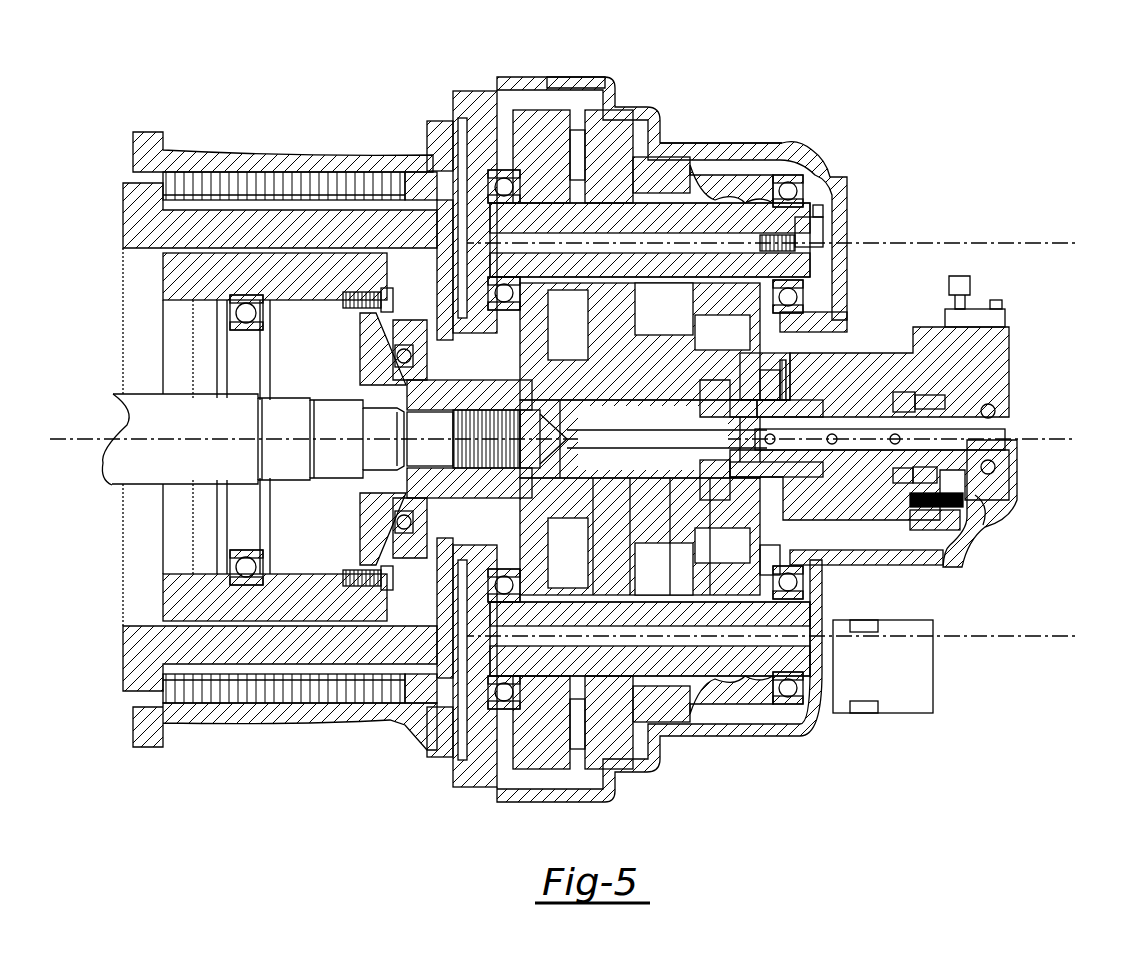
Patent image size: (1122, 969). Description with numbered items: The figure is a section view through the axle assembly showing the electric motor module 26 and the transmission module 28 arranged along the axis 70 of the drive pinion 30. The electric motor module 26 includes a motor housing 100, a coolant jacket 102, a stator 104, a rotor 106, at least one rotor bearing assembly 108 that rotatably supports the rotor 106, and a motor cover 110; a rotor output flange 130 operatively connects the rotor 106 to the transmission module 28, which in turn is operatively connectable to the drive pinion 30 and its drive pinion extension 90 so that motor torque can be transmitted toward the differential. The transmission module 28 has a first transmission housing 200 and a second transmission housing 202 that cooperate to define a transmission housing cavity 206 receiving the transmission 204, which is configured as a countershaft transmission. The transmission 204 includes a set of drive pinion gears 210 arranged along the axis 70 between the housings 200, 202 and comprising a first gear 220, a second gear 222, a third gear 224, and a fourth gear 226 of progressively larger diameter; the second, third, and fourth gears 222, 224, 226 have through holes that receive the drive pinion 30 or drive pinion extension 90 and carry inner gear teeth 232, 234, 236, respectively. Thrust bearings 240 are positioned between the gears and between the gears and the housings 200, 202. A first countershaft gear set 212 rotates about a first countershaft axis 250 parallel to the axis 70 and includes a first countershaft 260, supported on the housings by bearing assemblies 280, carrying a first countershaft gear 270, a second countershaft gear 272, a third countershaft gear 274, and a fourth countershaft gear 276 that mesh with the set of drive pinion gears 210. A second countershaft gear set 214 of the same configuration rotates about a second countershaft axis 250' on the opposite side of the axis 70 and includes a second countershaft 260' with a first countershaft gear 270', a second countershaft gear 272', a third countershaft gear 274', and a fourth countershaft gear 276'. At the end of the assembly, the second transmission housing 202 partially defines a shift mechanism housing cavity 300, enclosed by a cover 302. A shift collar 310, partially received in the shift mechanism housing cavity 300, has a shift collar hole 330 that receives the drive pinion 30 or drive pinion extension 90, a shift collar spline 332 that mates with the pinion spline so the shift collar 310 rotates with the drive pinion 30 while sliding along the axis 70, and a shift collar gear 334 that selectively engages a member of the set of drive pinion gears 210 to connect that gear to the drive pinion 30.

The electric motor module 26 is at (282, 153).
The transmission module 28 is at (795, 130).
The drive pinion 30 is at (127, 425).
The axis 70 is at (1049, 434).
The drive pinion extension 90 is at (672, 445).
The motor housing 100 is at (300, 720).
The coolant jacket 102 is at (257, 707).
The stator 104 is at (312, 660).
The rotor 106 is at (297, 607).
The rotor bearing assembly 108 is at (247, 550).
The motor cover 110 is at (458, 88).
The rotor output flange 130 is at (383, 355).
The first transmission housing 200 is at (528, 86).
The second transmission housing 202 is at (585, 78).
The transmission 204 is at (758, 700).
The transmission housing cavity 206 is at (700, 158).
The set of drive pinion gears 210 is at (800, 468).
The first countershaft gear set 212 is at (800, 227).
The second countershaft gear set 214 is at (807, 647).
The first gear 220 is at (530, 530).
The second gear 222 is at (600, 550).
The third gear 224 is at (665, 550).
The fourth gear 226 is at (700, 560).
The inner gear teeth 232 is at (605, 340).
The inner gear teeth 234 is at (640, 352).
The inner gear teeth 236 is at (735, 370).
The thrust bearing 240 is at (560, 470).
The first countershaft axis 250 is at (785, 213).
The second countershaft axis 250' is at (787, 663).
The first countershaft 260 is at (676, 178).
The second countershaft 260' is at (707, 624).
The first countershaft gear 270 is at (541, 119).
The first countershaft gear 270' is at (541, 761).
The second countershaft gear 272 is at (601, 119).
The second countershaft gear 272' is at (601, 761).
The third countershaft gear 274 is at (663, 135).
The third countershaft gear 274' is at (666, 742).
The fourth countershaft gear 276 is at (731, 140).
The fourth countershaft gear 276' is at (731, 737).
The bearing assembly 280 is at (453, 282).
The shift mechanism housing cavity 300 is at (905, 535).
The cover 302 is at (985, 528).
The shift collar 310 is at (873, 398).
The shift collar hole 330 is at (803, 470).
The shift collar spline 332 is at (757, 527).
The shift collar gear 334 is at (775, 400).